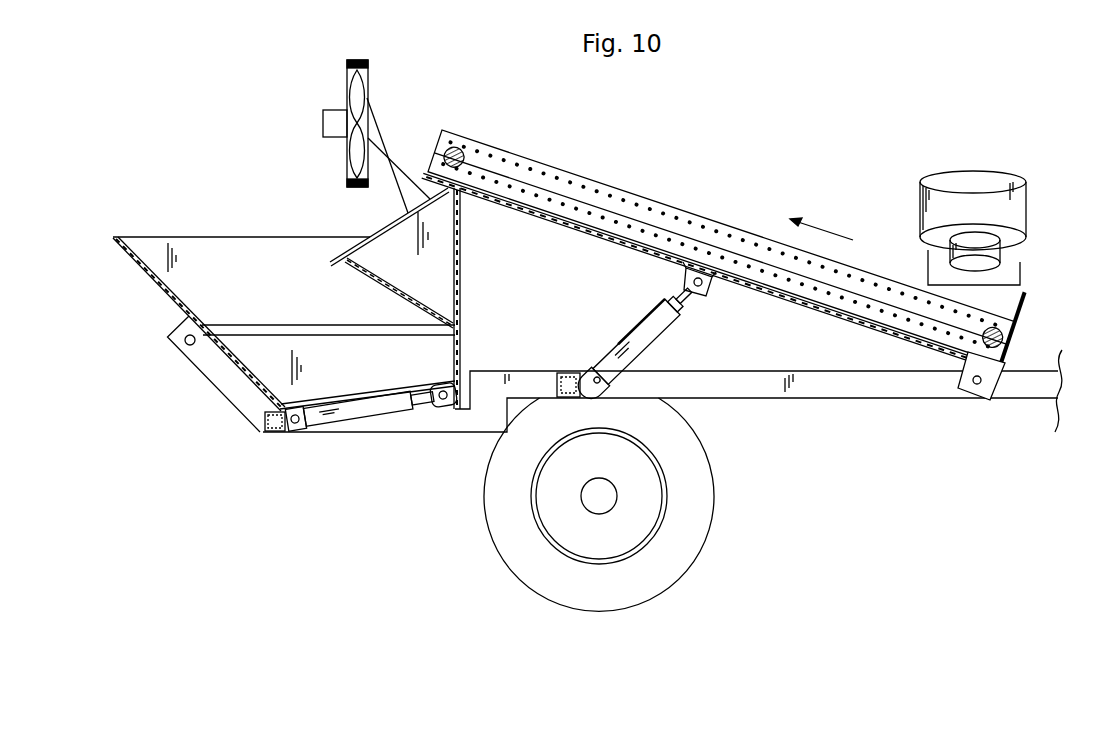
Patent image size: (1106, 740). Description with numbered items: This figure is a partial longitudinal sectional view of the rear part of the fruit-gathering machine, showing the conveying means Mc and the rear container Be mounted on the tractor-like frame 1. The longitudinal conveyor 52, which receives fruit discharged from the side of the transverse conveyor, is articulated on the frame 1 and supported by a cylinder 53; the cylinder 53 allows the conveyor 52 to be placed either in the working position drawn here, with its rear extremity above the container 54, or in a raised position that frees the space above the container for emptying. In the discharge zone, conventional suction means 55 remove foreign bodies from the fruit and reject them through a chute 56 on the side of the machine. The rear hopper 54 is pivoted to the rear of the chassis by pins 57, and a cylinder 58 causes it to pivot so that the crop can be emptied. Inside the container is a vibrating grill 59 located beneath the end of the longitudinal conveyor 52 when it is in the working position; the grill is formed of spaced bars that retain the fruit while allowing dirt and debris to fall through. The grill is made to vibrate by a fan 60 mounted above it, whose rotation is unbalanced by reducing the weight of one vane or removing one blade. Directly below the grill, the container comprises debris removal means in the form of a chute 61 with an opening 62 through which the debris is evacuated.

The frame 1 is at (841, 397).
The longitudinal conveyor 52 is at (871, 274).
The cylinder 53 is at (646, 321).
The container 54 is at (180, 302).
The suction means 55 is at (1000, 185).
The chute 56 is at (1016, 272).
The pins 57 is at (191, 348).
The cylinder 58 is at (375, 425).
The vibrating grill 59 is at (365, 238).
The fan 60 is at (357, 88).
The chute 61 is at (381, 284).
The opening 62 is at (460, 298).
The rear container Be is at (215, 245).
The conveying means Mc is at (745, 211).